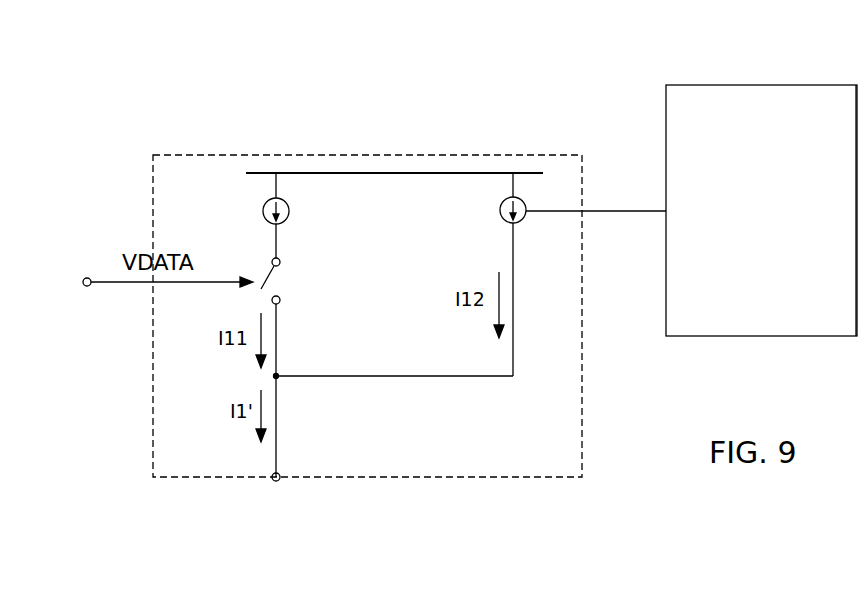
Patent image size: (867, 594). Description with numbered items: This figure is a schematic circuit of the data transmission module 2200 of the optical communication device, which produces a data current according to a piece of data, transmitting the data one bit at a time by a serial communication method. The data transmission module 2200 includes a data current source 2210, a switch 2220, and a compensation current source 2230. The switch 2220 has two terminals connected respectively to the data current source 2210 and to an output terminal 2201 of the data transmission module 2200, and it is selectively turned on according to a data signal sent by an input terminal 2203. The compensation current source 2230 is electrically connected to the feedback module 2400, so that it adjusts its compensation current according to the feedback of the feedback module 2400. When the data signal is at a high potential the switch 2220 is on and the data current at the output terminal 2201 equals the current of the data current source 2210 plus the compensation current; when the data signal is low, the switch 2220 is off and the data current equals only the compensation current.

The data transmission module 2200 is at (172, 150).
The input terminal 2203 is at (84, 279).
The data current source 2210 is at (287, 220).
The switch 2220 is at (281, 280).
The compensation current source 2230 is at (501, 219).
The output terminal 2201 is at (280, 481).
The feedback module 2400 is at (788, 256).